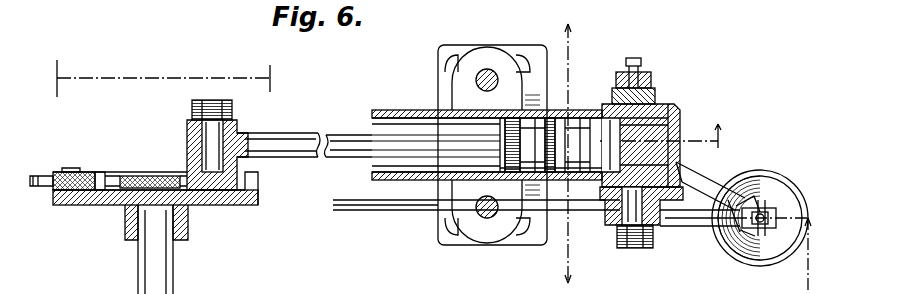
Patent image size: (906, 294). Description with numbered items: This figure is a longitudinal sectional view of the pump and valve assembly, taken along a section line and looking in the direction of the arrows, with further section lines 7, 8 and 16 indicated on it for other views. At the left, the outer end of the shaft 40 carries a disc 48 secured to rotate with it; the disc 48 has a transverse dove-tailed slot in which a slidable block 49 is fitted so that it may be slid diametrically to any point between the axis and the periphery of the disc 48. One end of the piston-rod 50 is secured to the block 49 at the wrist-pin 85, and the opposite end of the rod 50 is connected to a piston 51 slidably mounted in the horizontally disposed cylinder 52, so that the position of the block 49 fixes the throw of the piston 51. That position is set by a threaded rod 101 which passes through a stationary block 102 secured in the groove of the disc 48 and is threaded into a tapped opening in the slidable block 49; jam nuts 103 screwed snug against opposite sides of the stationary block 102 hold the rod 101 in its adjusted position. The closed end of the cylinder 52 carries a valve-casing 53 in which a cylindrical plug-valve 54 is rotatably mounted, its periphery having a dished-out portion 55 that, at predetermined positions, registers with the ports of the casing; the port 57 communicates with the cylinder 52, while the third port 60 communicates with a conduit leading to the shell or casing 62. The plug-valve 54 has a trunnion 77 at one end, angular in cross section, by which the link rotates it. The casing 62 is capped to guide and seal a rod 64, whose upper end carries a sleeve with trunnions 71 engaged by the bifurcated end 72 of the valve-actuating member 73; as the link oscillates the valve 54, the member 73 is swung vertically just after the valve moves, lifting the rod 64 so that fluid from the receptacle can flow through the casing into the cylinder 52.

The section line 7- 7 is at (646, 145).
The section line 8- 8 is at (156, 78).
The section line 16- 16 is at (674, 255).
The shaft 40 is at (142, 272).
The disc 48 is at (232, 205).
The slidable block 49 is at (185, 172).
The piston-rod 50 is at (320, 142).
The piston 51 is at (530, 170).
The cylinder 52 is at (385, 111).
The valve-casing 53 is at (680, 105).
The plug-valve 54 is at (676, 120).
The dished-out portion 55 is at (682, 132).
The port 57 is at (600, 118).
The third port 60 is at (682, 164).
The shell or casing 62 is at (738, 250).
The rod 64 is at (767, 206).
The trunnions 71 is at (760, 240).
The bifurcated end 72 is at (738, 228).
The valve-actuating member 73 is at (700, 231).
The trunnion 77 is at (618, 242).
The wrist-pin 85 is at (233, 128).
The threaded rod 101 is at (112, 172).
The stationary block 102 is at (60, 172).
The jam nuts 103 is at (84, 218).